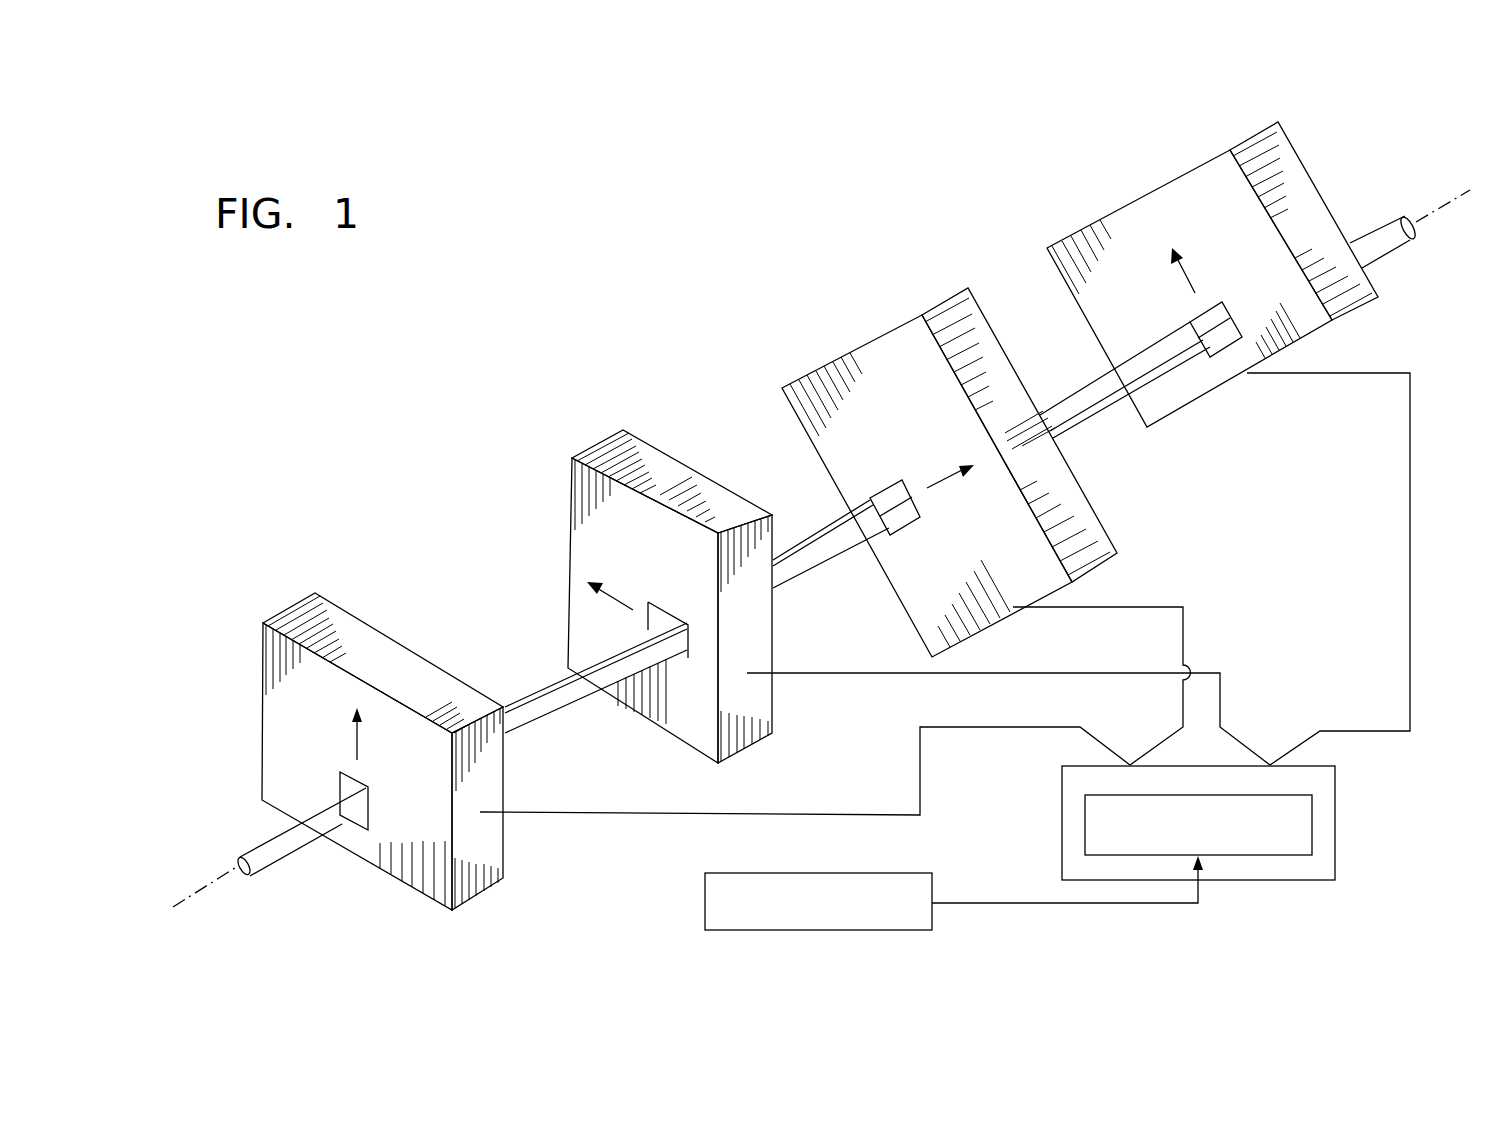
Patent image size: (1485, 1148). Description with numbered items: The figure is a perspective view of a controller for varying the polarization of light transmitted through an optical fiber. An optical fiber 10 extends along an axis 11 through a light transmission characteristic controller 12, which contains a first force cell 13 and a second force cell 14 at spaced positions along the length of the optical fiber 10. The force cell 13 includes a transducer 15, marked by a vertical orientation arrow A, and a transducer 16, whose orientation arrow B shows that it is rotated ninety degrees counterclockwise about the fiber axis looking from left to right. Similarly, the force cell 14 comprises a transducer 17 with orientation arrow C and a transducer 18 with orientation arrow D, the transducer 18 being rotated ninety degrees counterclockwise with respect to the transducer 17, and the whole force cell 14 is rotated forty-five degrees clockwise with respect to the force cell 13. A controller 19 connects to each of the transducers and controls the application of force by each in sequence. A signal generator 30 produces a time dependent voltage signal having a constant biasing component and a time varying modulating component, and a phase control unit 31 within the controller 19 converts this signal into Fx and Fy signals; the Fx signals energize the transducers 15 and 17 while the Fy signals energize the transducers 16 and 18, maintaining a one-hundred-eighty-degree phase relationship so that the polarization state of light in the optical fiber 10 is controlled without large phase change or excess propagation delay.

The optical fiber 10 is at (282, 850).
The axis 11 is at (200, 892).
The light transmission characteristic controller 12 is at (596, 274).
The first force cell 13 is at (602, 362).
The second force cell 14 is at (1088, 96).
The transducer 15 is at (288, 618).
The transducer 16 is at (603, 447).
The transducer 17 is at (945, 309).
The transducer 18 is at (1050, 223).
The controller 19 is at (1320, 764).
The signal generator 30 is at (815, 873).
The phase control unit 31 is at (1312, 814).